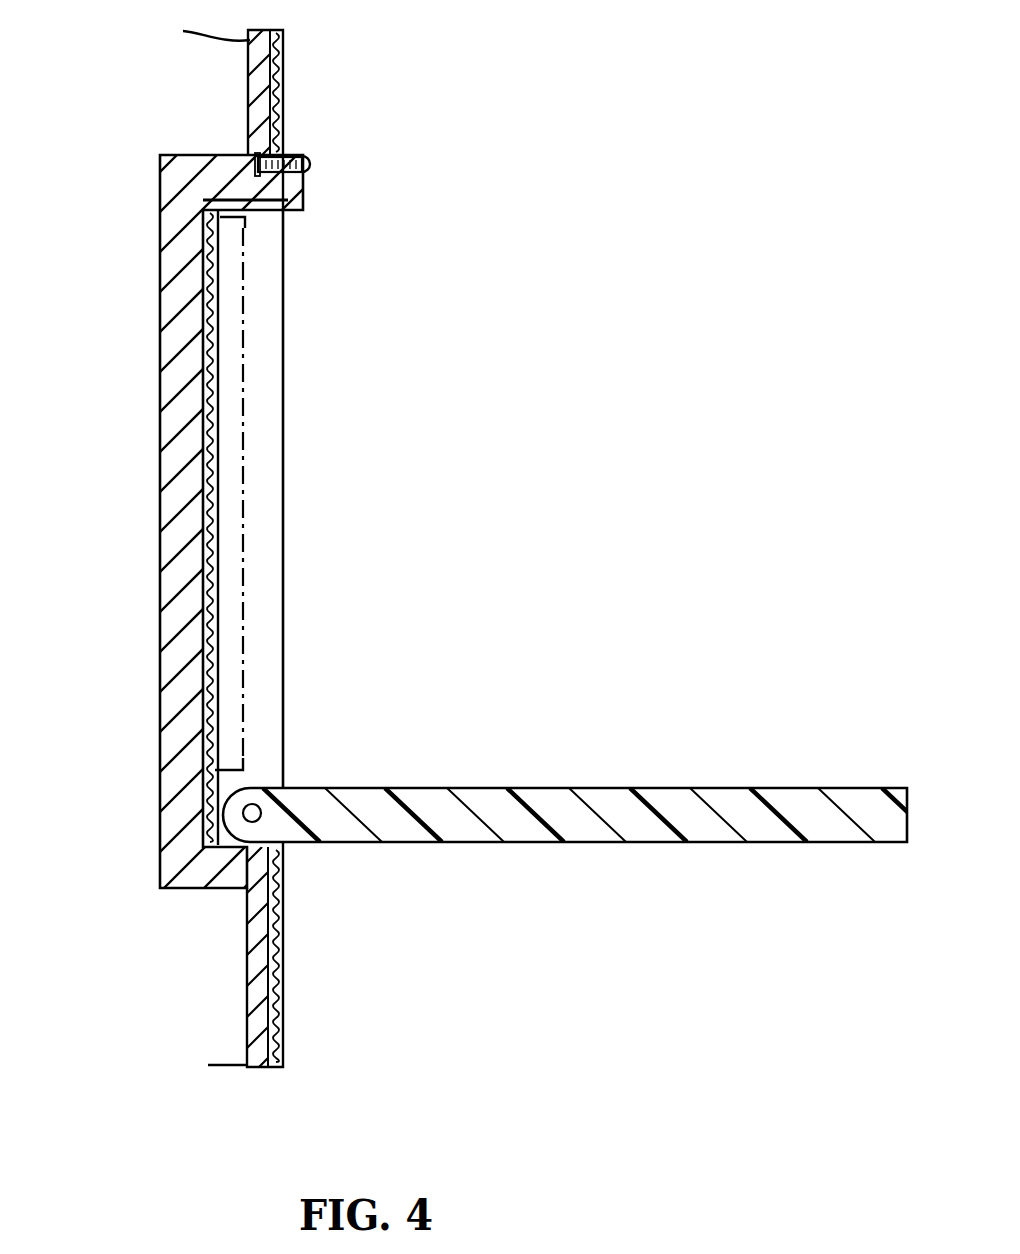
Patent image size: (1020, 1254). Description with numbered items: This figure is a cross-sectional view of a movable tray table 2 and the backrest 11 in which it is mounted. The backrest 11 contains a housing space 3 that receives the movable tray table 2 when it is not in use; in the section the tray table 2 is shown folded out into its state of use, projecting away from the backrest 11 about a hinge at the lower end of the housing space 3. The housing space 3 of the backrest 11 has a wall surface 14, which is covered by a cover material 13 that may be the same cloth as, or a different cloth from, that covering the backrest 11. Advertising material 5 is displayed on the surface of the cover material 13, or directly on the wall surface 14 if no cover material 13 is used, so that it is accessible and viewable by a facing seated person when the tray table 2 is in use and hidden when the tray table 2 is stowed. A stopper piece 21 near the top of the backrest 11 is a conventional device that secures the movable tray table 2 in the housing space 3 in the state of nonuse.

The movable tray table 2 is at (790, 788).
The housing space 3 is at (252, 502).
The advertising material 5 is at (243, 410).
The backrest 11 is at (178, 413).
The cover material 13 is at (240, 313).
The wall surface 14 is at (208, 295).
The stopper piece 21 is at (318, 162).